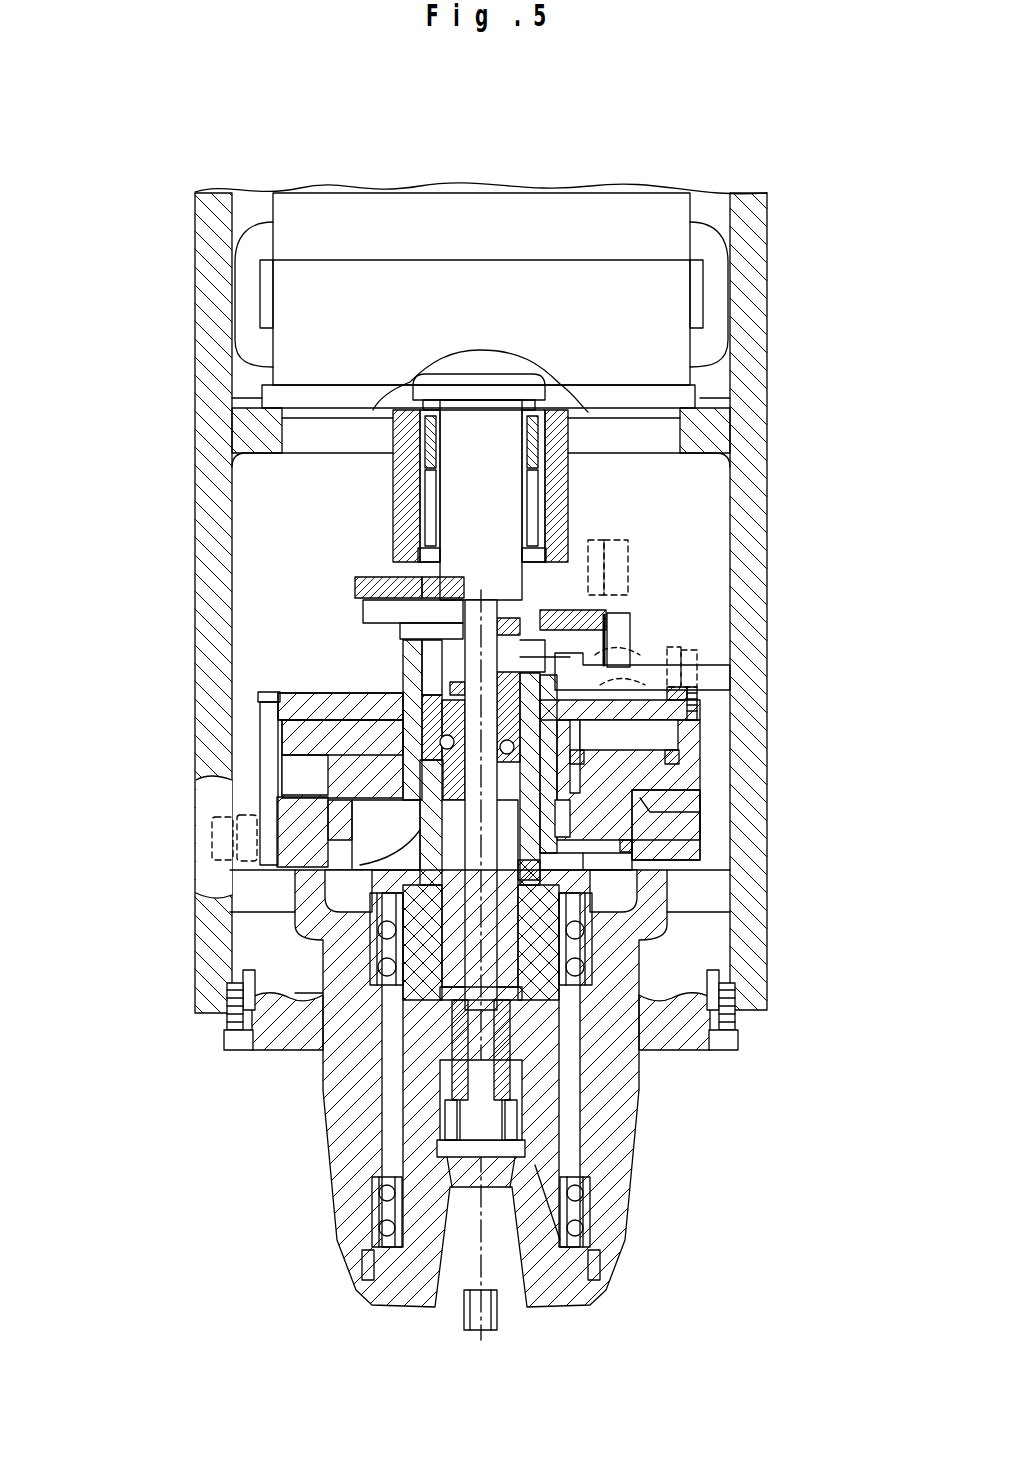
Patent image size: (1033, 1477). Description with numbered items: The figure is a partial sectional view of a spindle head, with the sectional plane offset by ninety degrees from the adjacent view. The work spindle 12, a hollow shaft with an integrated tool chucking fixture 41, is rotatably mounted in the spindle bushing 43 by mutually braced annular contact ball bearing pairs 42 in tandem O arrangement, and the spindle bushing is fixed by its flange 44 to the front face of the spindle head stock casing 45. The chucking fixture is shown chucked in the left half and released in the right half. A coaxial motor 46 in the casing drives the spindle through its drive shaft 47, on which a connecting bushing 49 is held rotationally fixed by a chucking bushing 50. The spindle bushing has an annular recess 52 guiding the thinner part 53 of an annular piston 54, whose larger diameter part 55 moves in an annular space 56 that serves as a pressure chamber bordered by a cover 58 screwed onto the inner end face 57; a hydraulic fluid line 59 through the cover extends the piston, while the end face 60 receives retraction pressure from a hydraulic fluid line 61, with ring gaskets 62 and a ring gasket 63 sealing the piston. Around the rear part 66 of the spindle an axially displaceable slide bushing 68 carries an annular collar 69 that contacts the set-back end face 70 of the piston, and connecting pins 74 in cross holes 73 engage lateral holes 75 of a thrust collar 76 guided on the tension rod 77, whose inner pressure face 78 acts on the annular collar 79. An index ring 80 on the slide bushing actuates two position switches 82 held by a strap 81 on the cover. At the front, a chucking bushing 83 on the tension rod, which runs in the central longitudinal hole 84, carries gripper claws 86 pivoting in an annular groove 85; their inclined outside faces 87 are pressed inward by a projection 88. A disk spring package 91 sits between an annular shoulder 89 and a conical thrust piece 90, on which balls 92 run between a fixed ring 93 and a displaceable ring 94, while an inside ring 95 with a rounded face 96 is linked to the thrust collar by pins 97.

The work spindle 12 is at (440, 1130).
The tool chucking fixture 41 is at (362, 1200).
The annular contact ball bearing pairs 42 is at (375, 1252).
The spindle bushing 43 is at (320, 1150).
The flange 44 is at (262, 1045).
The spindle head stock casing 45 is at (205, 975).
The motor 46 is at (465, 212).
The drive shaft 47 is at (470, 440).
The connecting bushing 49 is at (530, 462).
The chucking bushing 50 is at (545, 470).
The annular recess 52 is at (300, 900).
The thinner part 53 is at (300, 832).
The annular piston 54 is at (300, 760).
The larger diameter part 55 is at (268, 722).
The annular space 56 is at (290, 775).
The inner end face 57 is at (655, 810).
The cover 58 is at (600, 740).
The hydraulic fluid line 59 is at (690, 680).
The end face 60 is at (640, 840).
The hydraulic fluid line 61 is at (240, 815).
The ring gaskets 62 is at (630, 760).
The ring gasket 63 is at (620, 860).
The rear part 66 is at (600, 890).
The slide bushing 68 is at (645, 788).
The annular collar 69 is at (630, 870).
The set-back end face 70 is at (330, 850).
The cross holes 73 is at (560, 640).
The connecting pins 74 is at (385, 600).
The lateral holes 75 is at (525, 585).
The thrust collar 76 is at (478, 605).
The tension rod 77 is at (520, 960).
The inner pressure face 78 is at (655, 672).
The annular collar 79 is at (660, 702).
The index ring 80 is at (428, 595).
The strap 81 is at (625, 640).
The position switches 82 is at (615, 578).
The chucking bushing 83 is at (505, 1060).
The central longitudinal hole 84 is at (640, 1045).
The annular groove 85 is at (500, 1090).
The gripper claws 86 is at (512, 1130).
The inclined outside faces 87 is at (560, 1240).
The projection 88 is at (520, 1150).
The annular shoulder 89 is at (400, 1080).
The thrust piece 90 is at (420, 795).
The disk spring package 91 is at (330, 1060).
The balls 92 is at (370, 700).
The ring 93 is at (350, 700).
The ring 94 is at (400, 705).
The inside ring 95 is at (425, 680).
The rounded face 96 is at (440, 700).
The pins 97 is at (400, 620).